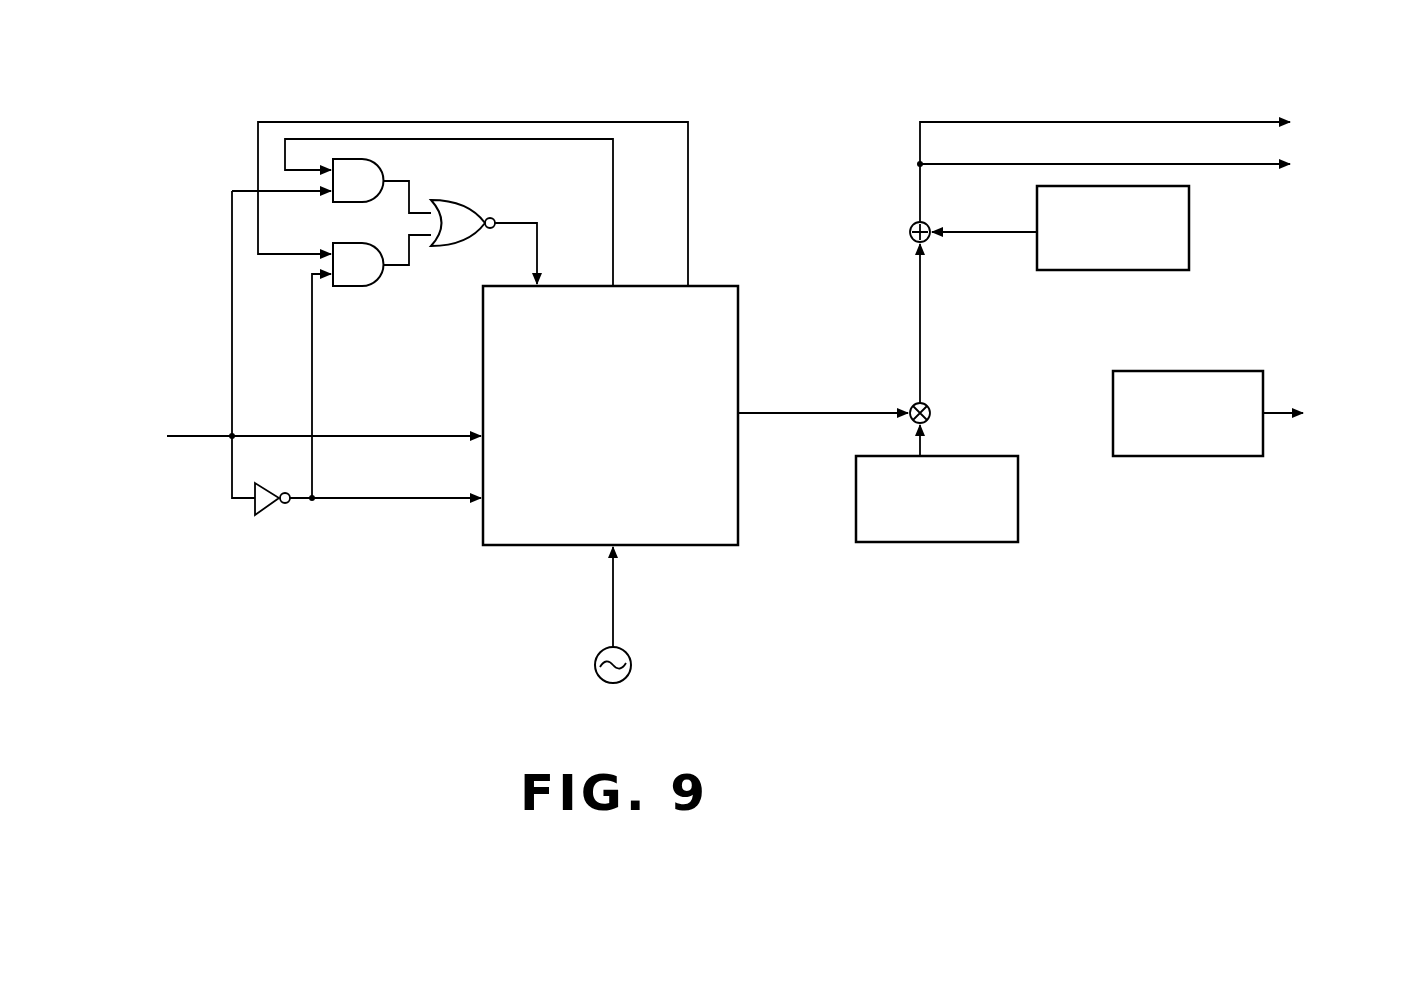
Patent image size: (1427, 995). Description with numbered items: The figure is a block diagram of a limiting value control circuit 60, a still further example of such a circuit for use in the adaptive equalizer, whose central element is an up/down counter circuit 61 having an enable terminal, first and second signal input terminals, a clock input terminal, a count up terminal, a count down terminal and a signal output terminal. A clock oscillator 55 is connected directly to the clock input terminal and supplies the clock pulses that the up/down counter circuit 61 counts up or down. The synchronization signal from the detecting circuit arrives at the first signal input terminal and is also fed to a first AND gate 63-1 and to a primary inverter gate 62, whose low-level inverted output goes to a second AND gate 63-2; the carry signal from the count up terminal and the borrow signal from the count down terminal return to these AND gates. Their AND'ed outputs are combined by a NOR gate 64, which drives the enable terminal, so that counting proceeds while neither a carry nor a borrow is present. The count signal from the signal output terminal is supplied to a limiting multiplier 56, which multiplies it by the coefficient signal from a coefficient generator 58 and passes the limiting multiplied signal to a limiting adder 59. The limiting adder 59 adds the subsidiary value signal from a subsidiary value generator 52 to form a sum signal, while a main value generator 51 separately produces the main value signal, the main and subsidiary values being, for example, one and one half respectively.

The limiting value control circuit 60 is at (755, 103).
The up/down counter circuit 61 is at (738, 337).
The primary inverter gate 62 is at (267, 507).
The first AND gate 63-1 is at (380, 162).
The second AND gate 63-2 is at (358, 286).
The NOR gate 64 is at (466, 202).
The clock oscillator 55 is at (631, 665).
The limiting multiplier 56 is at (928, 405).
The coefficient generator 58 is at (1008, 456).
The limiting adder 59 is at (927, 224).
The subsidiary value generator 52 is at (1189, 207).
The main value generator 51 is at (1218, 371).